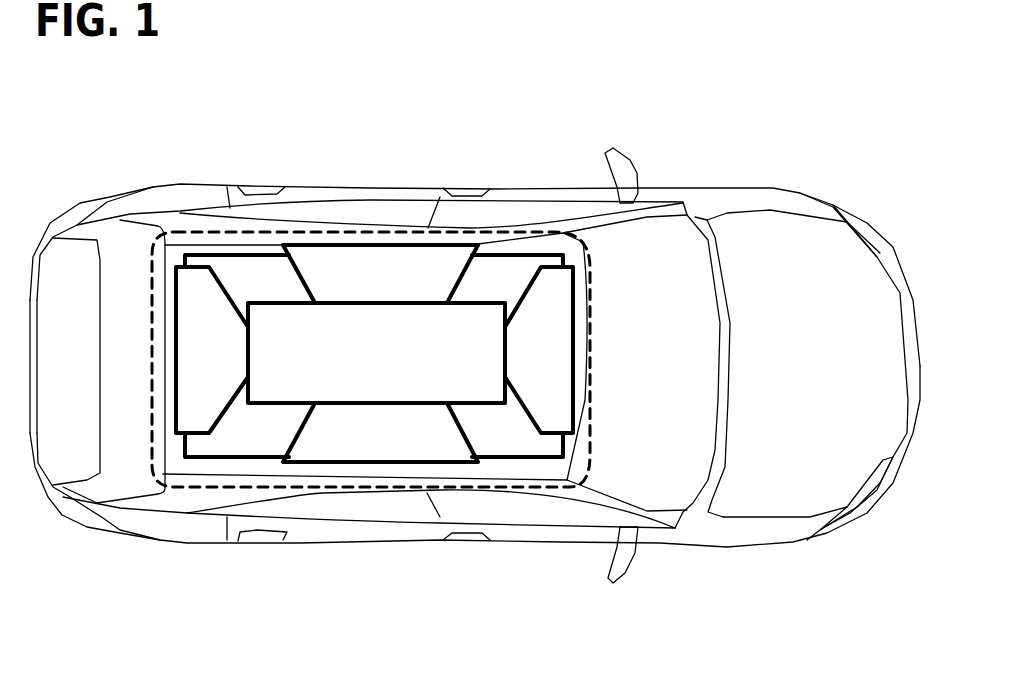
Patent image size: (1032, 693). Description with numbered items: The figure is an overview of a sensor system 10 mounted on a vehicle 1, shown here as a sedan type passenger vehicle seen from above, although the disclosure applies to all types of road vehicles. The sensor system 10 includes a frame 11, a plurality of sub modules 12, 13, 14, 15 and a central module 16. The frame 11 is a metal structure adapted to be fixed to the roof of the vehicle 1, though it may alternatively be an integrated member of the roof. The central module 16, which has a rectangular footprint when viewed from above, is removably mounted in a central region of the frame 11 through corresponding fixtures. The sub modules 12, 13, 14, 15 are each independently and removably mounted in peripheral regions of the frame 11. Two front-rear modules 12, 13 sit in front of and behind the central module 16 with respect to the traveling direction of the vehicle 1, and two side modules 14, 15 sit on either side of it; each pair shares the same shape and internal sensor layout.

The vehicle 1 is at (763, 187).
The sensor system 10 is at (331, 339).
The frame 11 is at (563, 255).
The front-rear module 12 is at (588, 265).
The front-rear module 13 is at (173, 435).
The side module 14 is at (277, 278).
The side module 15 is at (300, 428).
The central module 16 is at (462, 323).